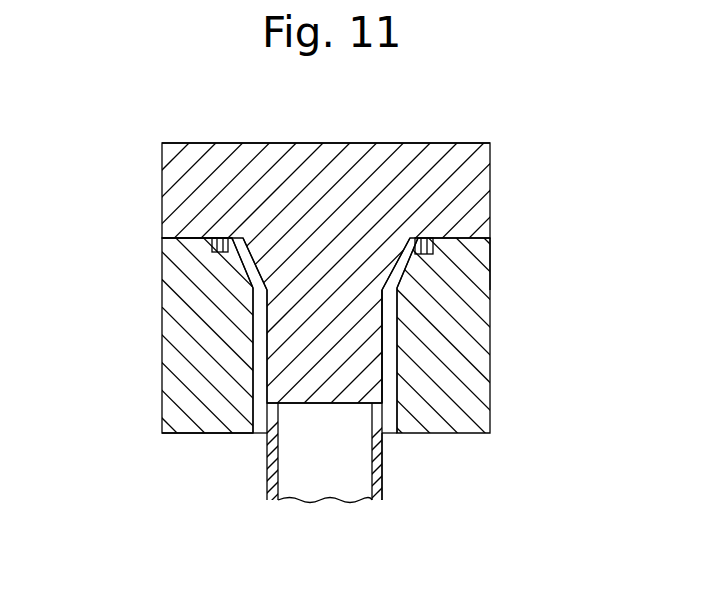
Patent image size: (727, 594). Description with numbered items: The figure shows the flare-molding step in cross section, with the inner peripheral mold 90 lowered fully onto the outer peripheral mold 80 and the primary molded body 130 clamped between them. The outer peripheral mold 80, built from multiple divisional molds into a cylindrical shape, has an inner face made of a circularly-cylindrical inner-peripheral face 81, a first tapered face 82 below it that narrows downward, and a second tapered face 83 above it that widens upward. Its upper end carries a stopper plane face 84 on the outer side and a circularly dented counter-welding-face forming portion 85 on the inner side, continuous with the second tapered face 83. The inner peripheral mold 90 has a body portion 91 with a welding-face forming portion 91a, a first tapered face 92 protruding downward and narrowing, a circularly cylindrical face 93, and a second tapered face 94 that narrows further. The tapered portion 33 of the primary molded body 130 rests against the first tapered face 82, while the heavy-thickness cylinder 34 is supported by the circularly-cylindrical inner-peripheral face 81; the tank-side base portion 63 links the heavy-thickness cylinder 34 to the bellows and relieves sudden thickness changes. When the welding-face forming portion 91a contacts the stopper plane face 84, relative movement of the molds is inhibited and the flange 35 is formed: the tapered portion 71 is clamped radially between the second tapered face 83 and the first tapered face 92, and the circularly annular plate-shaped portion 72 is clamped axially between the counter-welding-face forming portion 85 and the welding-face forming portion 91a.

The inner peripheral mold 90 is at (491, 131).
The body portion 91 is at (477, 170).
The welding-face forming portion 91a is at (490, 256).
The first tapered face 92 is at (443, 268).
The circularly cylindrical face 93 is at (440, 334).
The second tapered face 94 is at (392, 386).
The circularly annular plate-shaped portion 72 is at (430, 228).
The tapered portion 71 is at (420, 292).
The heavy-thickness cylinder 34 is at (392, 352).
The tapered portion 33 is at (414, 433).
The tank-side base portion 63 is at (383, 484).
The primary molded body 130 is at (260, 496).
The outer peripheral mold 80 is at (162, 435).
The circularly-cylindrical inner-peripheral face 81 is at (257, 343).
The first tapered face 82 is at (257, 402).
The second tapered face 83 is at (258, 245).
The stopper plane face 84 is at (185, 238).
The counter-welding-face forming portion 85 is at (238, 247).
The flange 35 is at (232, 265).